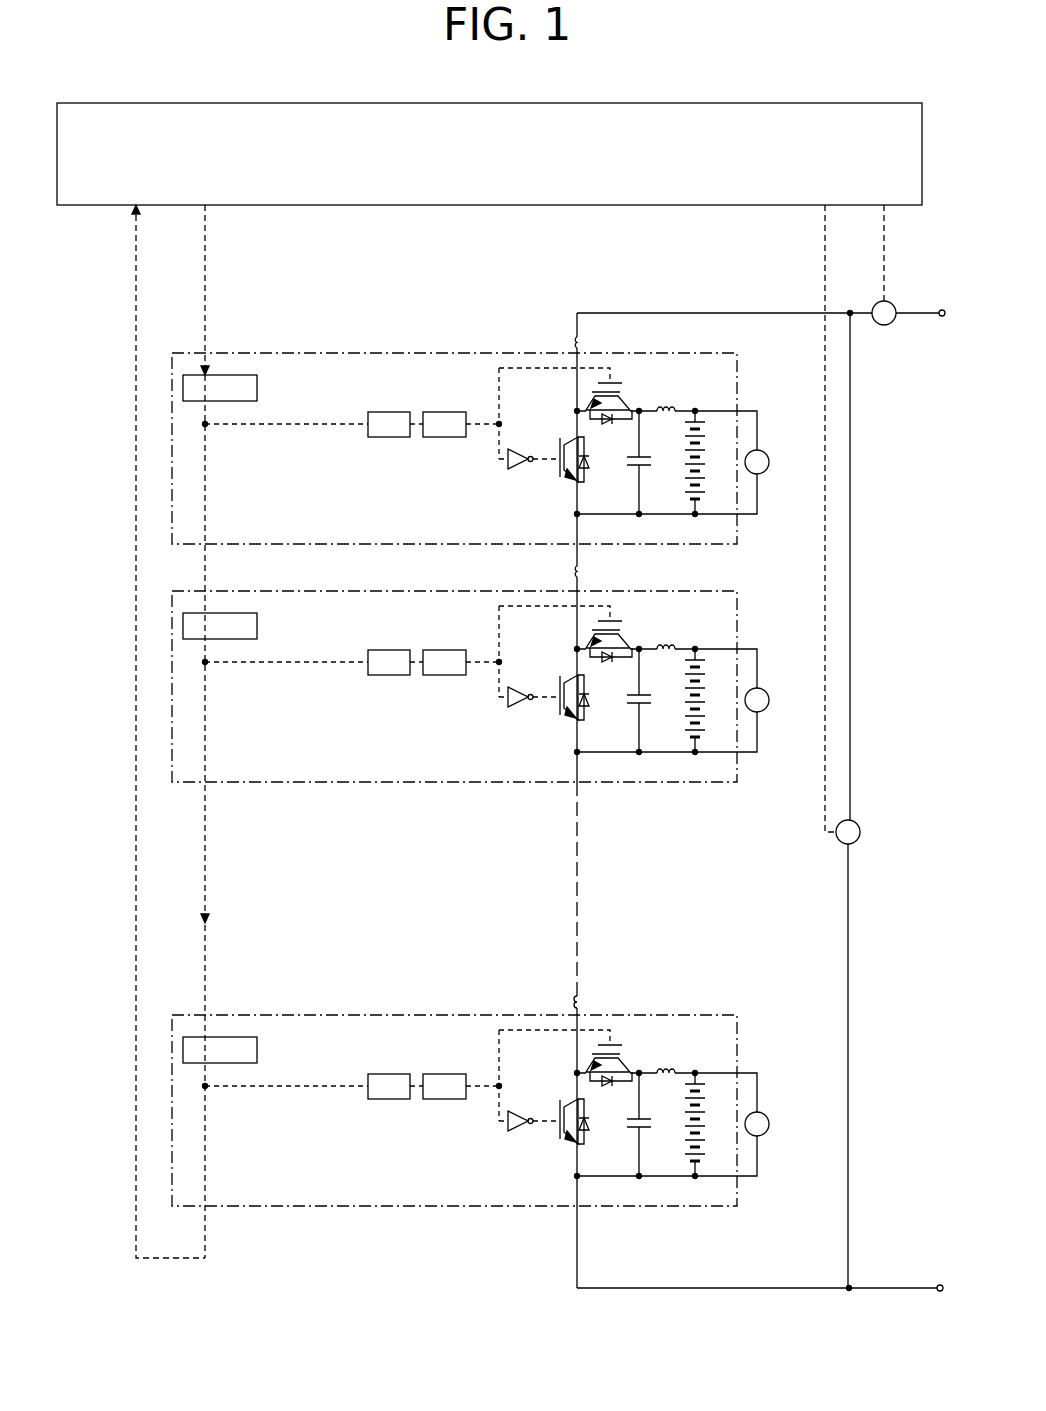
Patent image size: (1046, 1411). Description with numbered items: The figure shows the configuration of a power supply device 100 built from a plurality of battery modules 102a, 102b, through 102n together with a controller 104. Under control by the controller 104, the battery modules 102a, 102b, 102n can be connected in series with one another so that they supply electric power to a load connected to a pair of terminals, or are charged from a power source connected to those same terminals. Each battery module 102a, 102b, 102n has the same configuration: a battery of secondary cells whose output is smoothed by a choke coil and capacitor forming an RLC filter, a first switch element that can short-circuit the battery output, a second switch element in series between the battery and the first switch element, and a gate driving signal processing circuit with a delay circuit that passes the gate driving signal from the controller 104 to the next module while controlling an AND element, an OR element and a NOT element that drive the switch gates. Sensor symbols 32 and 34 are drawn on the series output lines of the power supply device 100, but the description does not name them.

The power supply device 100 is at (525, 1379).
The battery module 102a is at (712, 353).
The battery module 102b is at (470, 671).
The battery module 102n is at (470, 1095).
The controller 104 is at (865, 103).
The current sensor 32 is at (888, 302).
The voltage sensor 34 is at (852, 823).